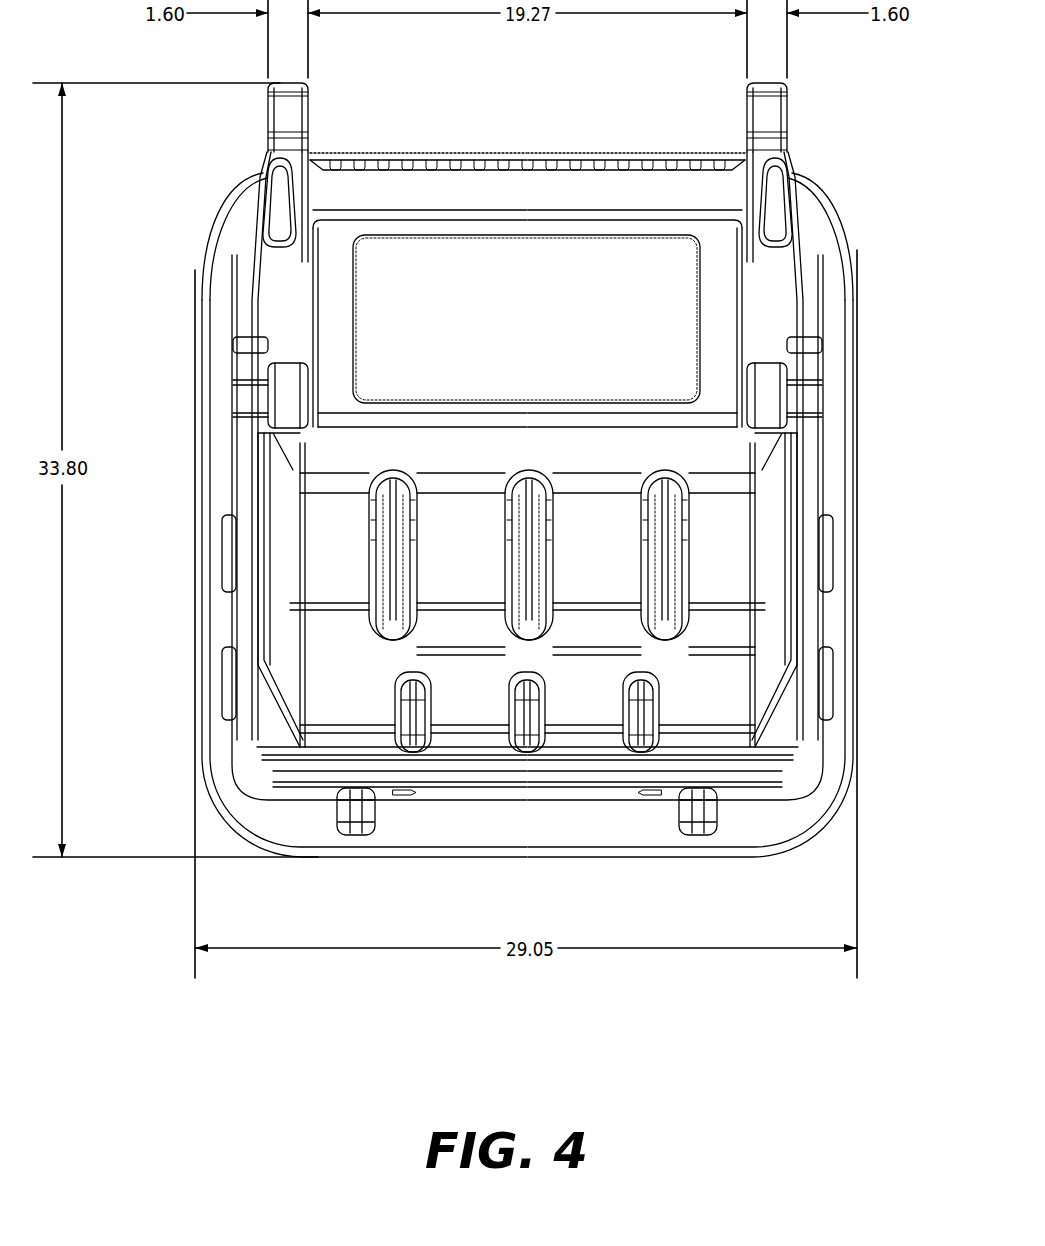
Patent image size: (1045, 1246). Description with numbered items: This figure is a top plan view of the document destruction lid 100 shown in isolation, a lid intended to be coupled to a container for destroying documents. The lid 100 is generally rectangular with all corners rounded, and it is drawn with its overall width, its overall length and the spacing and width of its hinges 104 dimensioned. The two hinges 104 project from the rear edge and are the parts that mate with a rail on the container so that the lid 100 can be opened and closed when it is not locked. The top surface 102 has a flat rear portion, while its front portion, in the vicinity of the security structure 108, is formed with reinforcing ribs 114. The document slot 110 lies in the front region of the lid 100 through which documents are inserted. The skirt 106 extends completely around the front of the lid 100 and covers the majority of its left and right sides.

The document destruction lid 100 is at (183, 186).
The top surface 102 is at (518, 268).
The hinges 104 is at (785, 107).
The skirt 106 is at (196, 345).
The security structure 108 is at (677, 730).
The document slot 110 is at (437, 798).
The reinforcing ribs 114 is at (688, 551).